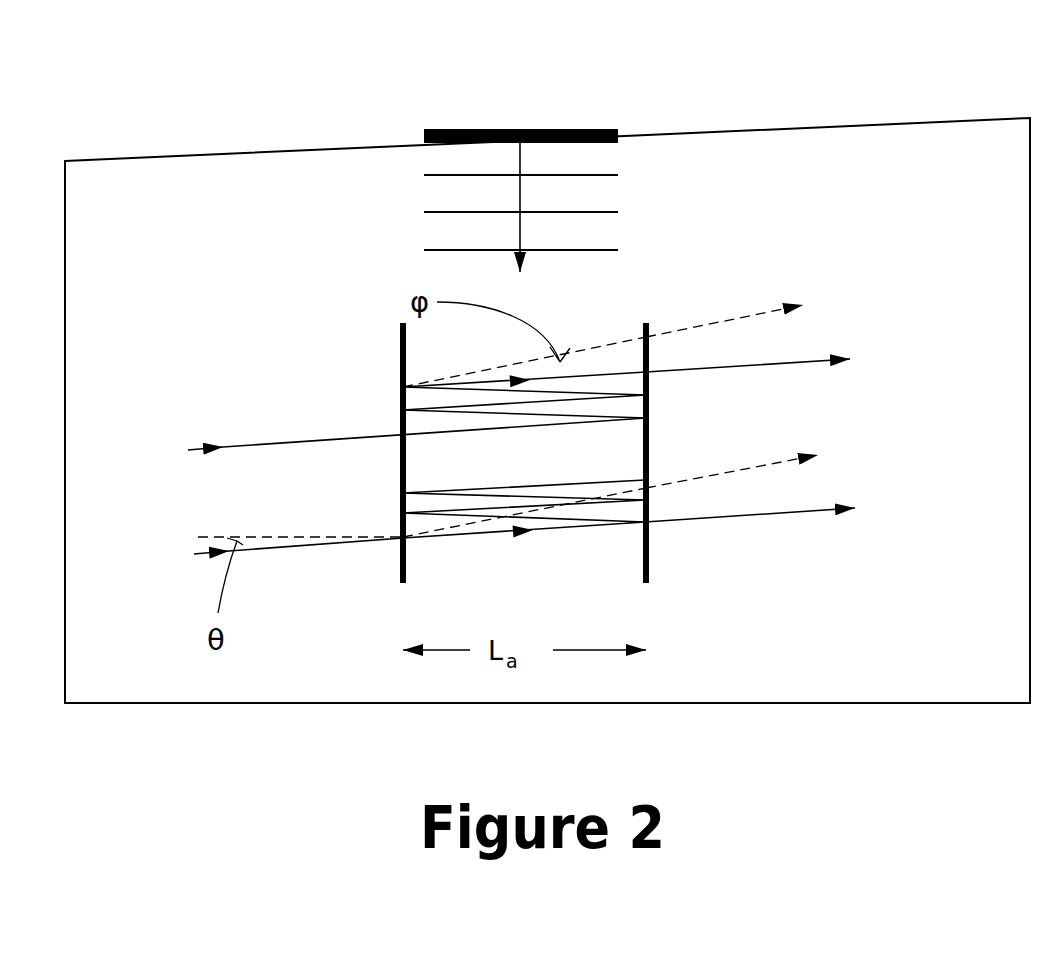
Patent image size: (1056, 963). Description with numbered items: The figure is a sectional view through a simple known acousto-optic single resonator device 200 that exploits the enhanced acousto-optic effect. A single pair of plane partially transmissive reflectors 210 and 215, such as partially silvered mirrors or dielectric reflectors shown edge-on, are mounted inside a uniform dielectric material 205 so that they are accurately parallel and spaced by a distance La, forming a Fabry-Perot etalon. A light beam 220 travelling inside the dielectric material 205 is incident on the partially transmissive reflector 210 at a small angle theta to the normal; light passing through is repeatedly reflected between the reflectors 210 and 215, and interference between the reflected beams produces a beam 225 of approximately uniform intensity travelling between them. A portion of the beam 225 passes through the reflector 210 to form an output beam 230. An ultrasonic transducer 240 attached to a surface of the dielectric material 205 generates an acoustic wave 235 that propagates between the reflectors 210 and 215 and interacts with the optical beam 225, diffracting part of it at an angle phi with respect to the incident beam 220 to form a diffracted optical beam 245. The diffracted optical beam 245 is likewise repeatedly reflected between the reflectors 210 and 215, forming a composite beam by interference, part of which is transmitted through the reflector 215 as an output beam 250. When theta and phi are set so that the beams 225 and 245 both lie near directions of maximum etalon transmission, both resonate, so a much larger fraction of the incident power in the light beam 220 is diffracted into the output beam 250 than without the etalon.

The single resonator device 200 is at (247, 727).
The uniform dielectric material 205 is at (223, 182).
The partially transmissive reflector 210 is at (400, 560).
The partially transmissive reflector 215 is at (650, 557).
The light beam 220 is at (300, 438).
The beam 225 is at (497, 483).
The output beam 230 is at (802, 516).
The acoustic wave 235 is at (630, 193).
The ultrasonic transducer 240 is at (482, 130).
The diffracted optical beam 245 is at (604, 338).
The output beam 250 is at (768, 305).